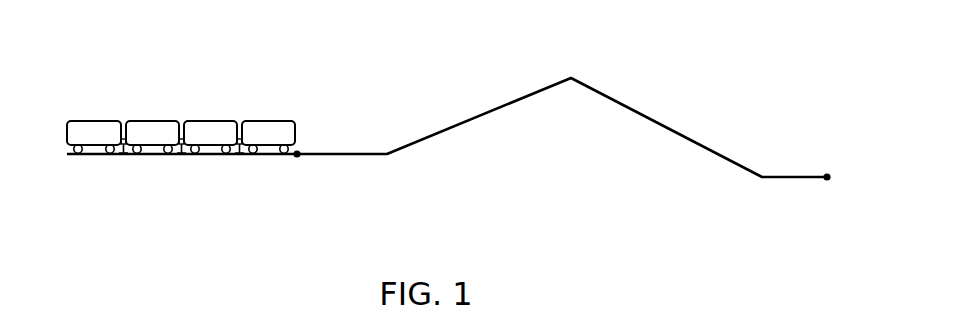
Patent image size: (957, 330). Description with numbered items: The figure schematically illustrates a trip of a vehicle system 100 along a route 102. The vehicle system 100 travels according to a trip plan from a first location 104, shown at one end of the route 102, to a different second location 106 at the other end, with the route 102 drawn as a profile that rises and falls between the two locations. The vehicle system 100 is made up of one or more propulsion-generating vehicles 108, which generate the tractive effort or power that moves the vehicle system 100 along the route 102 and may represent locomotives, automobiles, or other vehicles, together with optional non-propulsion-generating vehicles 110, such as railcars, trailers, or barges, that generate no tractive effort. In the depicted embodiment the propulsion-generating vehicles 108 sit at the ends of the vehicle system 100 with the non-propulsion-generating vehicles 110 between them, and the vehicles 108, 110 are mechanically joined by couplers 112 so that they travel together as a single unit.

The vehicle system 100 is at (181, 150).
The route 102 is at (371, 170).
The first location 104 is at (298, 157).
The second location 106 is at (828, 181).
The propulsion-generating vehicle 108 is at (90, 120).
The non-propulsion-generating vehicle 110 is at (157, 120).
The coupler 112 is at (188, 166).